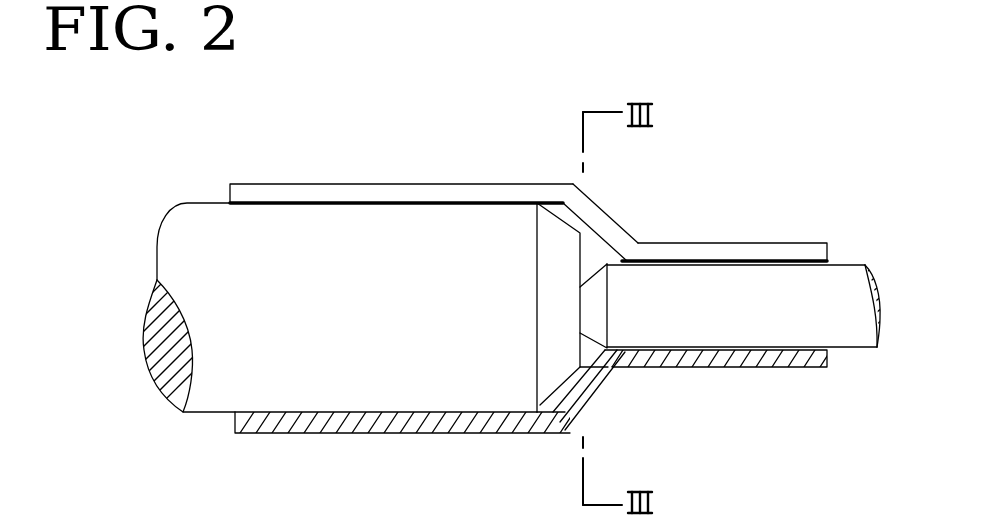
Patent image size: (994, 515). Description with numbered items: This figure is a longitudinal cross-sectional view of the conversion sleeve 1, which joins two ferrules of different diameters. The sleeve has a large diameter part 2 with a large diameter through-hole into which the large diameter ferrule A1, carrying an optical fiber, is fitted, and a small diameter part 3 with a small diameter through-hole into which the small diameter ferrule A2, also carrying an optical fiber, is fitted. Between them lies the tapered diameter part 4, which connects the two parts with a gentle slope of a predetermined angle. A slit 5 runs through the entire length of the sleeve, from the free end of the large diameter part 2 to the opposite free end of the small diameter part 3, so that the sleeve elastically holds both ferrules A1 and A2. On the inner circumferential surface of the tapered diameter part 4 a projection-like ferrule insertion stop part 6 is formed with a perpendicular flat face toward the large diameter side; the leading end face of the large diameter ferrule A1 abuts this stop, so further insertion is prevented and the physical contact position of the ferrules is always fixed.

The conversion sleeve 1 is at (675, 222).
The large diameter part 2 is at (268, 184).
The small diameter part 3 is at (737, 243).
The tapered diameter part 4 is at (613, 217).
The slit 5 is at (403, 193).
The ferrule insertion stop part 6 is at (610, 373).
The large diameter ferrule A1 is at (207, 395).
The small diameter ferrule A2 is at (840, 335).